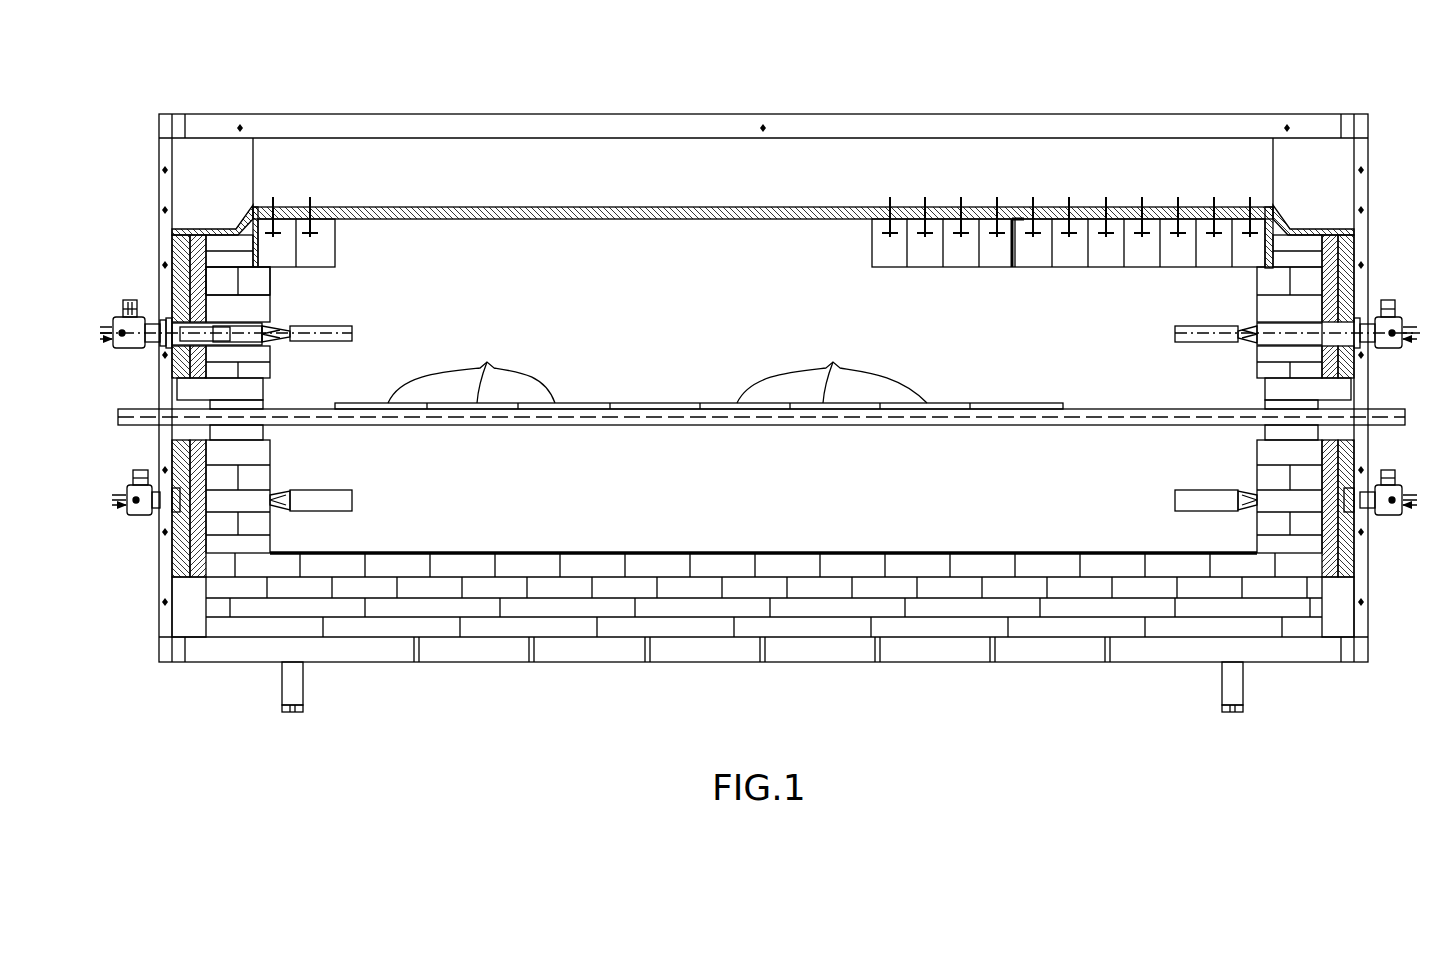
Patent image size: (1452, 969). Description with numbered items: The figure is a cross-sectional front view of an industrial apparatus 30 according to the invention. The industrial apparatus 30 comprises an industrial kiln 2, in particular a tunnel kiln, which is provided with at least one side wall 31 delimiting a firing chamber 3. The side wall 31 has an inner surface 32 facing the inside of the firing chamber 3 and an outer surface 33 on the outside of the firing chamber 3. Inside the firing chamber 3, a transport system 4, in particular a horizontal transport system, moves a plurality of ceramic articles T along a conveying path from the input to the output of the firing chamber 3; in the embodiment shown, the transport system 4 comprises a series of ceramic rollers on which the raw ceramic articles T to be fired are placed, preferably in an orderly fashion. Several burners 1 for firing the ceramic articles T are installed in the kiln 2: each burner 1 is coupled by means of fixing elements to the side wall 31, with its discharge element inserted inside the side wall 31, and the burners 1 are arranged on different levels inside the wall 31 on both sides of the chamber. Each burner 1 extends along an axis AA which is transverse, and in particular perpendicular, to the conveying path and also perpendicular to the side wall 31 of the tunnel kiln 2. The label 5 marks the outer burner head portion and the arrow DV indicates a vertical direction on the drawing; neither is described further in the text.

The burner 1 is at (127, 297).
The industrial kiln 2 is at (1372, 197).
The firing chamber 3 is at (1027, 298).
The transport system 4 is at (1085, 428).
The burner head 5 is at (130, 350).
The industrial apparatus 30 is at (313, 97).
The side wall 31 is at (240, 284).
The inner surface 32 is at (272, 297).
The outer surface 33 is at (163, 279).
The ceramic articles T is at (657, 369).
The axis AA is at (352, 333).
The vertical direction DV is at (143, 592).